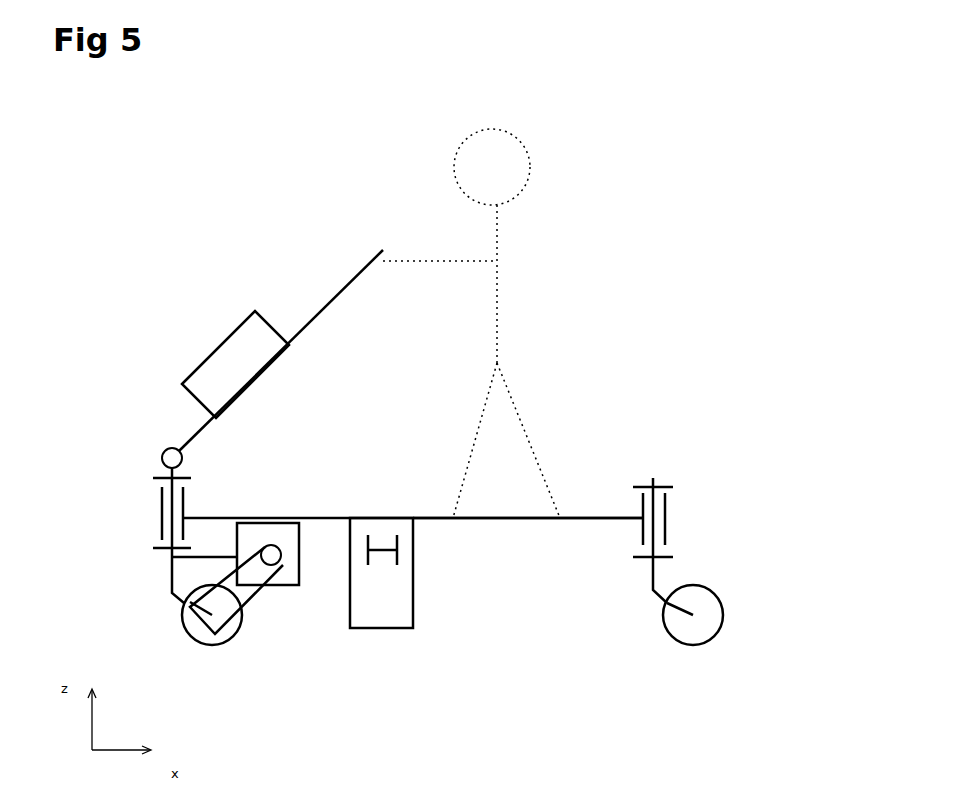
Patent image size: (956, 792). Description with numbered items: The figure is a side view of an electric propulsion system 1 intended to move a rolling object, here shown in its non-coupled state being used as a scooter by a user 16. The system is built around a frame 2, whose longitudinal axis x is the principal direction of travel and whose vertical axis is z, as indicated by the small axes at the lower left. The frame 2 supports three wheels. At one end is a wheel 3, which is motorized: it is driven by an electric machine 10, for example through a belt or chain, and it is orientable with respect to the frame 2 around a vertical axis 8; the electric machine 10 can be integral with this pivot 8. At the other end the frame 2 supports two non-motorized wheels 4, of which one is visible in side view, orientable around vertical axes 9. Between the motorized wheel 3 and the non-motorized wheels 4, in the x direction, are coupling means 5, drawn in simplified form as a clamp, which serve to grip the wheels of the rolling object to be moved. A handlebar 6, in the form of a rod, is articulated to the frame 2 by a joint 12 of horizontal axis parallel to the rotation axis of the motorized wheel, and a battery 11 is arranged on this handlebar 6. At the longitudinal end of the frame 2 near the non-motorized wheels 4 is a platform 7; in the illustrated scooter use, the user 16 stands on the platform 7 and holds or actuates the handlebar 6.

The electric propulsion system 1 is at (708, 417).
The frame 2 is at (430, 518).
The wheel 3 is at (192, 640).
The wheels 4 is at (707, 622).
The coupling means 5 is at (400, 552).
The handlebar 6 is at (330, 298).
The platform 7 is at (508, 518).
The vertical axis 8 is at (167, 527).
The vertical axes 9 is at (665, 515).
The electric machine 10 is at (270, 587).
The battery 11 is at (210, 370).
The joint 12 is at (172, 447).
The user 16 is at (517, 393).